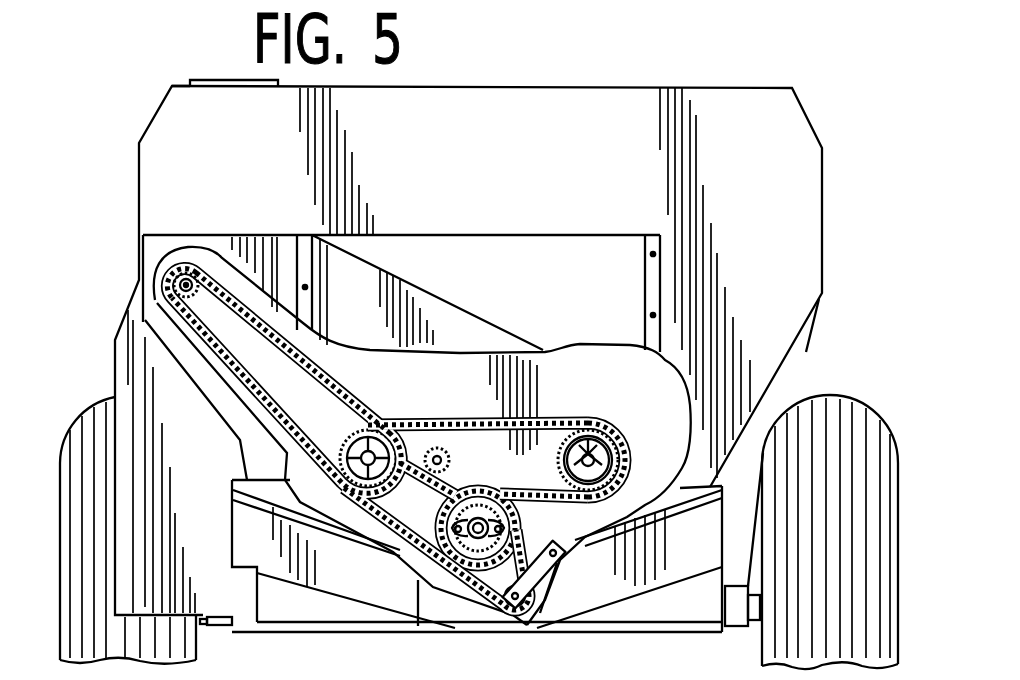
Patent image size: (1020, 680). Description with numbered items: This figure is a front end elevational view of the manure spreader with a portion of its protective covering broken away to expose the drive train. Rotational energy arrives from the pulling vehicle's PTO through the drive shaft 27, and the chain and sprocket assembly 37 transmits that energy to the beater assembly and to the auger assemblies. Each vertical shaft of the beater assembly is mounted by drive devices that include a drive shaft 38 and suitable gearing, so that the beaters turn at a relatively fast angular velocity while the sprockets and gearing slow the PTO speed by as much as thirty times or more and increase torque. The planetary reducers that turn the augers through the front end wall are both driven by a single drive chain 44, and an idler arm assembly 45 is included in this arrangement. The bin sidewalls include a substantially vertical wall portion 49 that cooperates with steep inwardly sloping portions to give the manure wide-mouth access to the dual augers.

The vertical wall portion 49 is at (139, 196).
The drive shaft 38 is at (172, 281).
The chain and sprocket assembly 37 is at (622, 411).
The drive chain 44 is at (622, 452).
The drive shaft 27 is at (514, 519).
The idler arm assembly 45 is at (531, 612).